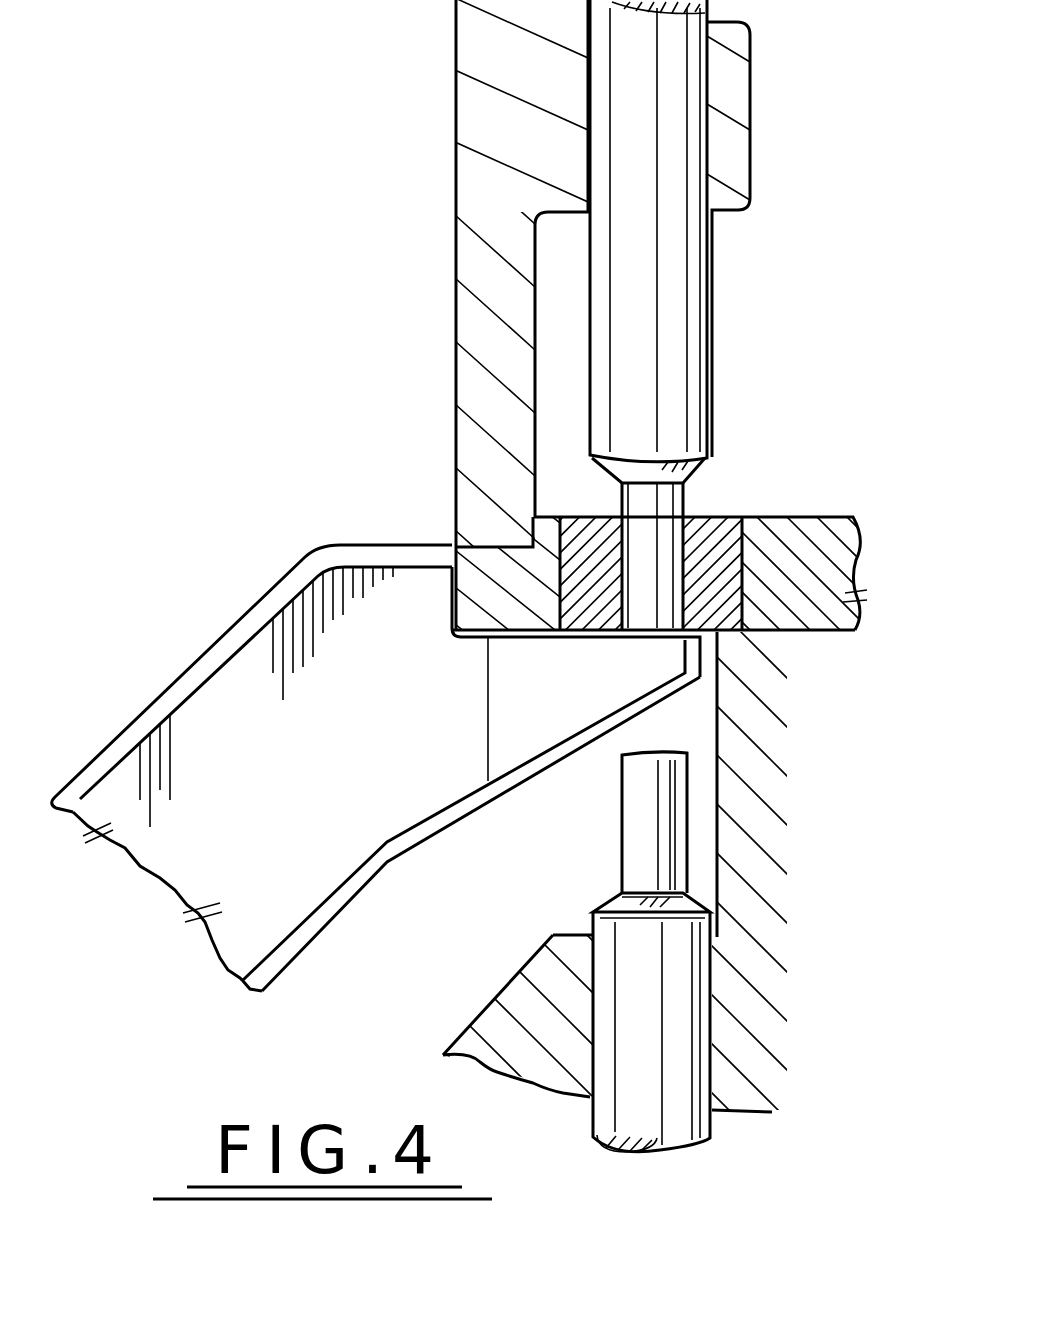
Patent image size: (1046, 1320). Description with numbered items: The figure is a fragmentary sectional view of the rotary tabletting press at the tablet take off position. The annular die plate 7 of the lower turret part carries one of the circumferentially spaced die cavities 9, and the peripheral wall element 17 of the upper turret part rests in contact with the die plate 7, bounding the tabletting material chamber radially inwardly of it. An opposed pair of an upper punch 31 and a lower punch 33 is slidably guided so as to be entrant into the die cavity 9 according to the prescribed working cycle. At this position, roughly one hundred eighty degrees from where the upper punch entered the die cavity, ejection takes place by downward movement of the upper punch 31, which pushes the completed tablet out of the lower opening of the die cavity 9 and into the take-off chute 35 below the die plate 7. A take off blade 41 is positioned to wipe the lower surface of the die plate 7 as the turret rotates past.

The annular die plate 7 is at (798, 557).
The die cavity 9 is at (695, 545).
The peripheral wall element 17 is at (498, 385).
The upper punch 31 is at (667, 347).
The lower punch 33 is at (655, 818).
The take-off chute 35 is at (372, 617).
The take off blade 41 is at (360, 740).